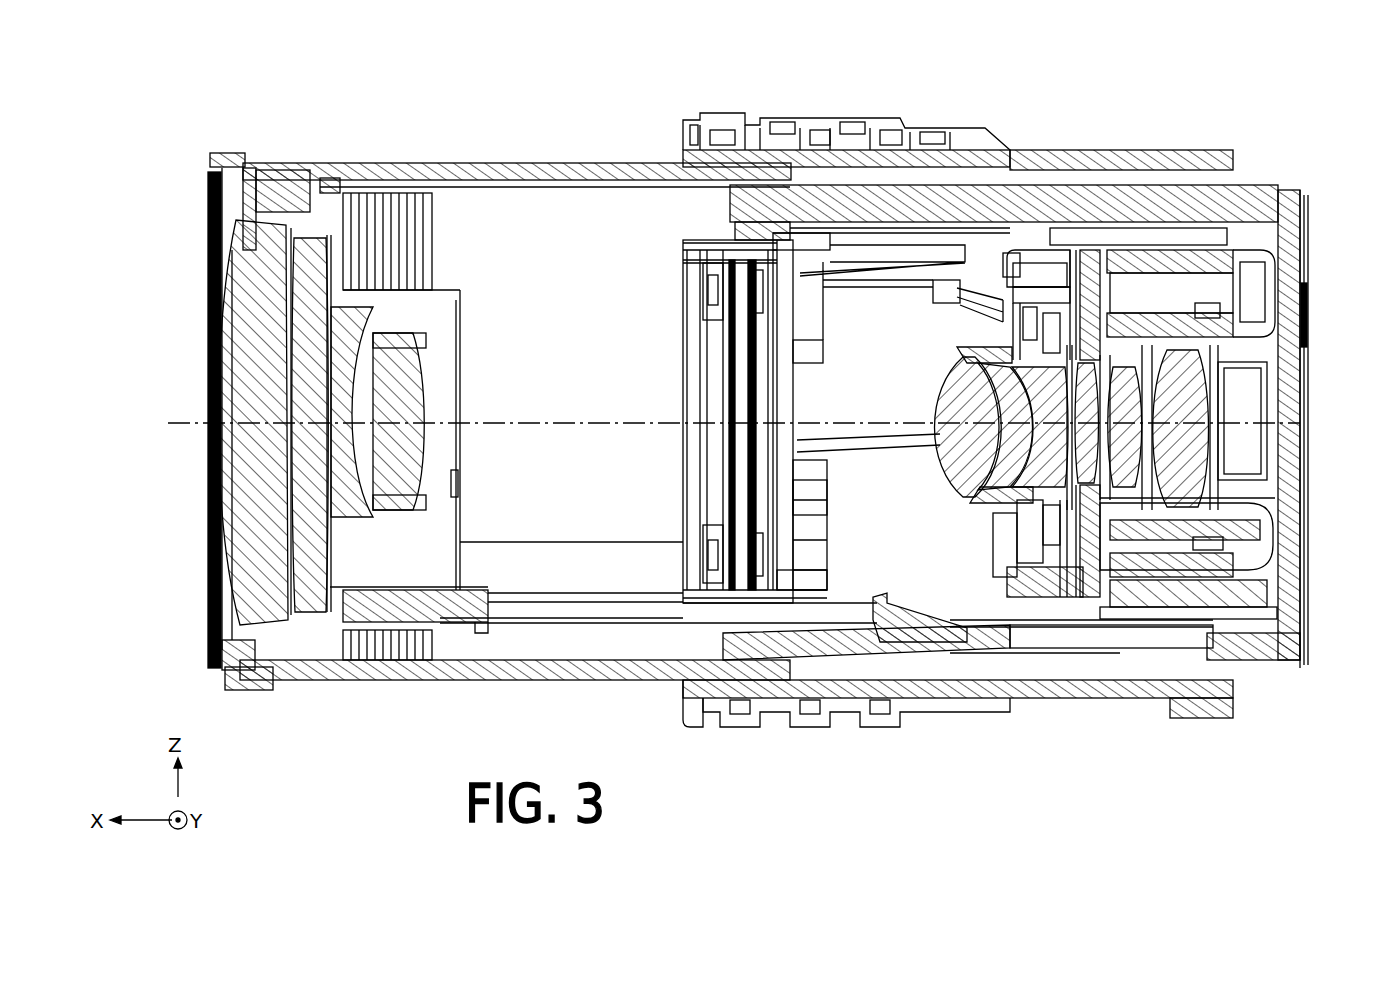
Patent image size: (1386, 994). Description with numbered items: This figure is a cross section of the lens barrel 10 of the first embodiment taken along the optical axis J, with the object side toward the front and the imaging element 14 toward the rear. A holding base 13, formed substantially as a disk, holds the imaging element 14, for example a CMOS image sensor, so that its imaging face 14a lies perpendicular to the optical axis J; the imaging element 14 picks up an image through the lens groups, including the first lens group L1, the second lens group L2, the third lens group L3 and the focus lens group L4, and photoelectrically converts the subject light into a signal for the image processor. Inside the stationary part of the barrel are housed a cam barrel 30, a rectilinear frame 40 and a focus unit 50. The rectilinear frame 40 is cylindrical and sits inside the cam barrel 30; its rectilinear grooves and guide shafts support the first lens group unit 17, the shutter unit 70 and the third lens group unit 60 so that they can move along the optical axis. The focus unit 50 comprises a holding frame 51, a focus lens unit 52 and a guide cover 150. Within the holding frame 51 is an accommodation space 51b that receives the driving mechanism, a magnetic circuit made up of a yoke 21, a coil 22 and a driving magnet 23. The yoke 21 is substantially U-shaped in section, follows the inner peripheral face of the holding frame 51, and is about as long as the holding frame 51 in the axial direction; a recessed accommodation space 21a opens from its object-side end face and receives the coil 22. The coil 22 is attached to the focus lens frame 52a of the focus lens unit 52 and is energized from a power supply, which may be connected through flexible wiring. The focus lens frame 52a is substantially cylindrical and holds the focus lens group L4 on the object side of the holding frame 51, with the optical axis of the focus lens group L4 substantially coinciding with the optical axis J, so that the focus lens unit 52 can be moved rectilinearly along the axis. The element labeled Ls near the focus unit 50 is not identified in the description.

The lens barrel 10 is at (1258, 102).
The holding base 13 is at (1295, 356).
The imaging element 14 is at (1300, 407).
The imaging face 14a is at (1275, 445).
The first lens group unit 17 is at (535, 172).
The yoke 21 is at (1240, 530).
The accommodation space 21a is at (1250, 490).
The coil 22 is at (1232, 545).
The driving magnet 23 is at (1232, 565).
The cam barrel 30 is at (1065, 250).
The rectilinear frame 40 is at (928, 200).
The focus unit 50 is at (1155, 270).
The holding frame 51 is at (1230, 260).
The accommodation space 51b is at (1262, 596).
The focus lens unit 52 is at (1165, 778).
The focus lens frame 52a is at (1110, 600).
The third lens group unit 60 is at (950, 348).
The shutter unit 70 is at (688, 238).
The guide cover 150 is at (1050, 260).
The optical axis J is at (724, 424).
The first lens group L1 is at (252, 686).
The second lens group L2 is at (360, 674).
The third lens group L3 is at (995, 480).
The focus lens group L4 is at (1135, 600).
The stator lens Ls is at (1190, 290).